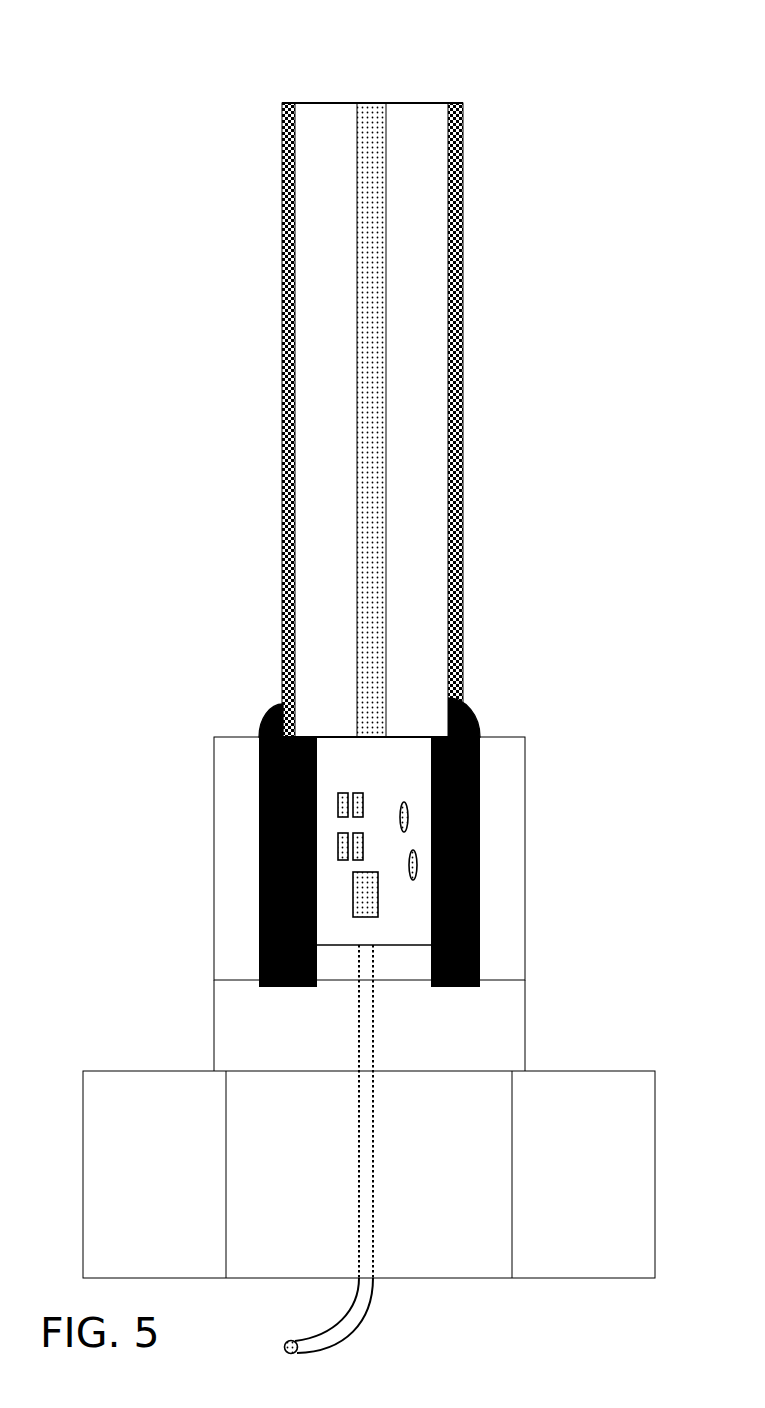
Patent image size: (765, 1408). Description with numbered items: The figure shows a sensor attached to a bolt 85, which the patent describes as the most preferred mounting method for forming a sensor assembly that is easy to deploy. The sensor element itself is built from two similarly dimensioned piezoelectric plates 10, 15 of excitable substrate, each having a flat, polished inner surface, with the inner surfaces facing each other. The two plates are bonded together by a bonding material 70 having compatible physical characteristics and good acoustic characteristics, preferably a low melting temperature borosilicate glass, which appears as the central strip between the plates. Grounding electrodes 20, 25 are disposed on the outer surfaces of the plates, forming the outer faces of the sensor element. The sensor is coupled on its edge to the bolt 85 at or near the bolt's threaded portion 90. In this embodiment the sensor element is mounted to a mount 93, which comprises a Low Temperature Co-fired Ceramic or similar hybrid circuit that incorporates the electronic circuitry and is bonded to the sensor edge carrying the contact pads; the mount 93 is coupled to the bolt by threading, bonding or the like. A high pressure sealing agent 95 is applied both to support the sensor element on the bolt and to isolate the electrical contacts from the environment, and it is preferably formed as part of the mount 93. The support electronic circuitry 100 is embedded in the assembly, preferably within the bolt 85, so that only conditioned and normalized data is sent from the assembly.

The piezoelectric plate 10 is at (330, 102).
The piezoelectric plate 15 is at (447, 103).
The grounding electrode 20 is at (282, 467).
The grounding electrode 25 is at (464, 612).
The bonding material 70 is at (375, 102).
The bolt 85 is at (560, 1071).
The threaded portion 90 is at (527, 913).
The mount 93 is at (260, 867).
The high pressure sealing agent 95 is at (265, 712).
The support electronic circuitry 100 is at (260, 945).